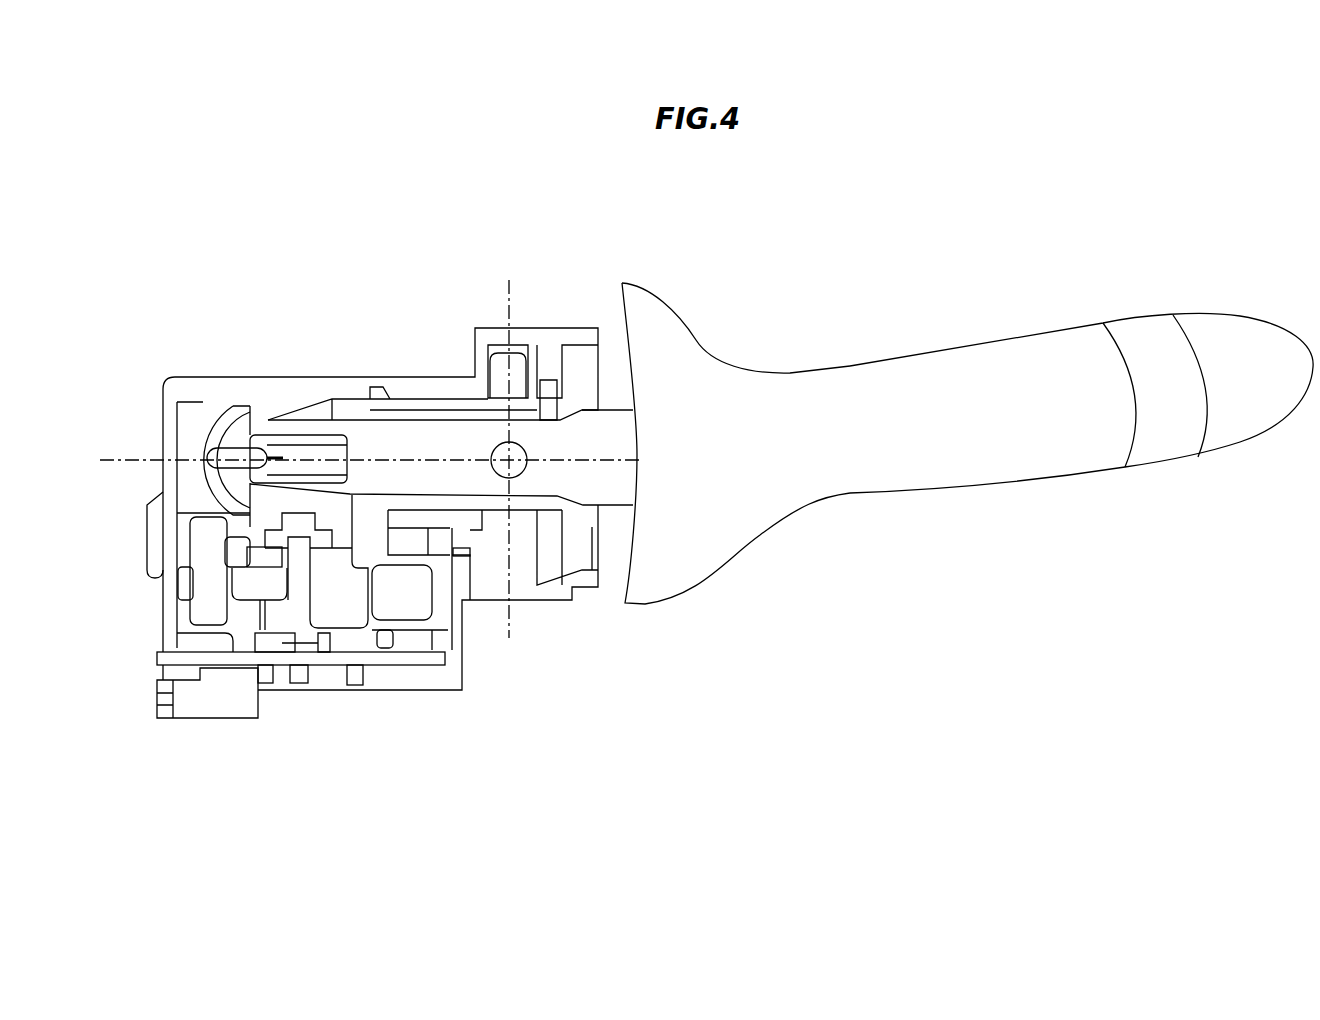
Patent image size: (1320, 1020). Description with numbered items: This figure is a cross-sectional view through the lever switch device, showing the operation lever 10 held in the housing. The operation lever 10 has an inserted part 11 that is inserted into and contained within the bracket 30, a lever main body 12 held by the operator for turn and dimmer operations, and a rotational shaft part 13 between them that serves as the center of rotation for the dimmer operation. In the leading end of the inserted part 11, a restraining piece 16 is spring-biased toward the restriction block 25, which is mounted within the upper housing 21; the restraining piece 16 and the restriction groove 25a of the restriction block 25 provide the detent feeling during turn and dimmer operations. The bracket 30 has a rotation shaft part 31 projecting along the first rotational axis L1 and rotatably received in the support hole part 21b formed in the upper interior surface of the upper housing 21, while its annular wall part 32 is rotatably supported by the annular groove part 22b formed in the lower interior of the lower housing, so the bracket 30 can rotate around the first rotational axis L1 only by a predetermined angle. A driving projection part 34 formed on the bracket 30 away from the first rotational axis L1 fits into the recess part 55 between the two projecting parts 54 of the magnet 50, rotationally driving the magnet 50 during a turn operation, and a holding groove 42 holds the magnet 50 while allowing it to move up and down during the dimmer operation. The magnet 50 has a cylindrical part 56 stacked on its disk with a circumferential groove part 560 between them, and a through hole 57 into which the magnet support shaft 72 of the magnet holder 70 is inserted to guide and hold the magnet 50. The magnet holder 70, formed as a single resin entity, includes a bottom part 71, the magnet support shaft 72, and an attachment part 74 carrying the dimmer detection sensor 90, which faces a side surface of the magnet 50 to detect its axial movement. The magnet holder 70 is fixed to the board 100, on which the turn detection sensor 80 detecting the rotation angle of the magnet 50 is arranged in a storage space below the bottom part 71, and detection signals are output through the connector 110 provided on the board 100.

The operation lever 10 is at (747, 370).
The inserted part 11 is at (422, 440).
The lever main body 12 is at (1012, 343).
The rotational shaft part 13 is at (497, 445).
The restraining piece 16 is at (247, 453).
The upper housing 21 is at (197, 375).
The support hole part 21b is at (497, 350).
The annular groove part 22b is at (462, 560).
The restriction block 25 is at (193, 435).
The restriction groove 25a is at (217, 422).
The bracket 30 is at (363, 403).
The rotation shaft part 31 is at (520, 350).
The annular wall part 32 is at (460, 542).
The driving projection part 34 is at (202, 612).
The holding groove 42 is at (282, 547).
The magnet 50 is at (240, 590).
The projecting parts 54 is at (188, 577).
The recess part 55 is at (227, 585).
The cylindrical part 56 is at (262, 517).
The circumferential groove part 560 is at (282, 565).
The through hole 57 is at (270, 665).
The magnet holder 70 is at (235, 638).
The bottom part 71 is at (333, 633).
The magnet support shaft 72 is at (307, 583).
The attachment part 74 is at (410, 627).
The turn detection sensor 80 is at (300, 605).
The dimmer detection sensor 90 is at (415, 603).
The board 100 is at (378, 660).
The connector 110 is at (223, 700).
The first rotational axis L1 is at (507, 287).